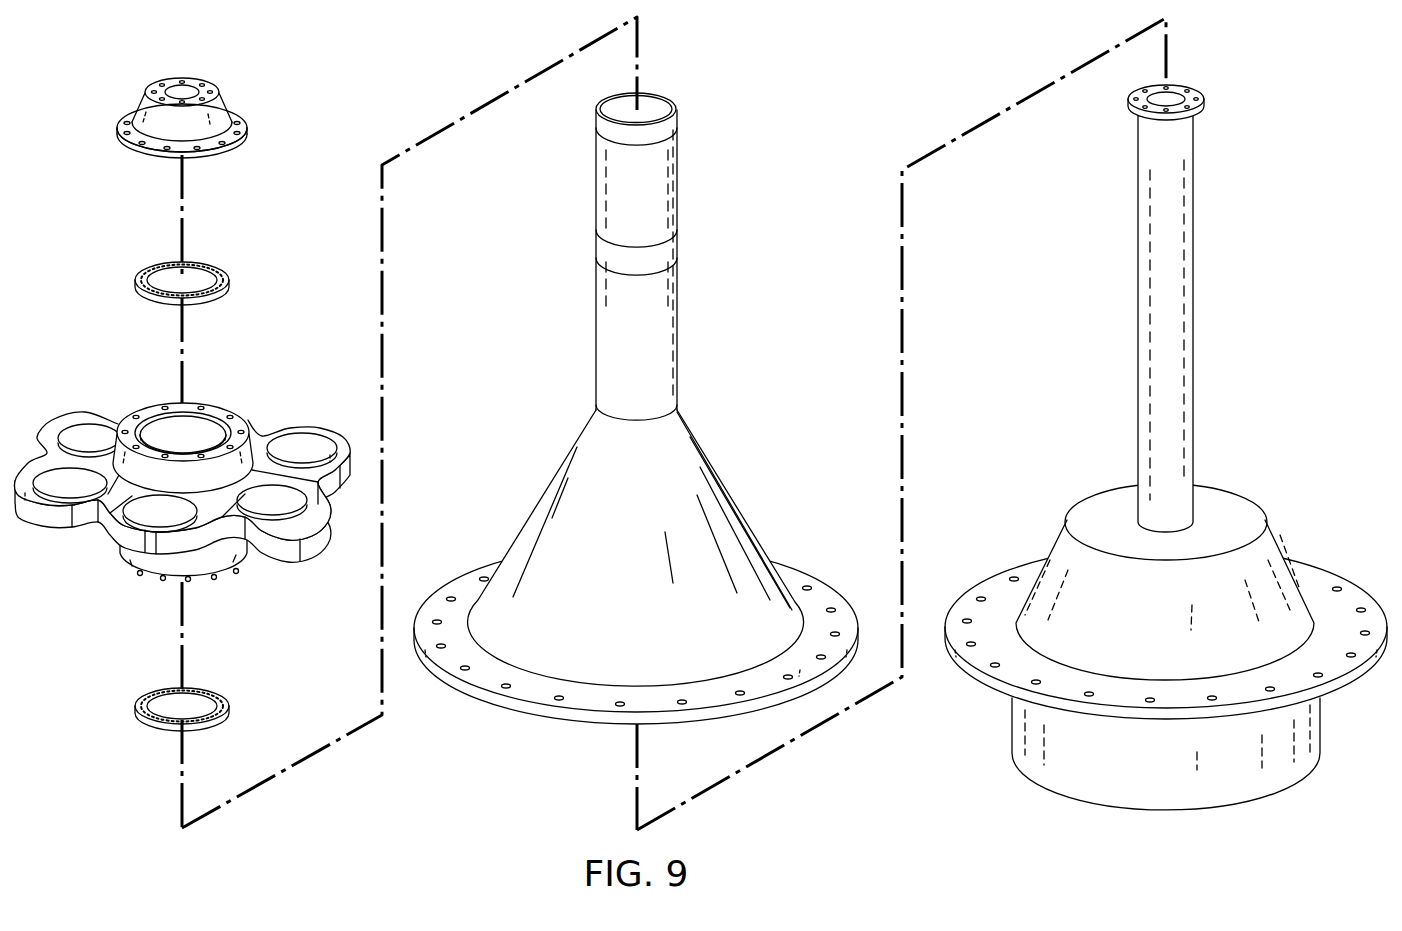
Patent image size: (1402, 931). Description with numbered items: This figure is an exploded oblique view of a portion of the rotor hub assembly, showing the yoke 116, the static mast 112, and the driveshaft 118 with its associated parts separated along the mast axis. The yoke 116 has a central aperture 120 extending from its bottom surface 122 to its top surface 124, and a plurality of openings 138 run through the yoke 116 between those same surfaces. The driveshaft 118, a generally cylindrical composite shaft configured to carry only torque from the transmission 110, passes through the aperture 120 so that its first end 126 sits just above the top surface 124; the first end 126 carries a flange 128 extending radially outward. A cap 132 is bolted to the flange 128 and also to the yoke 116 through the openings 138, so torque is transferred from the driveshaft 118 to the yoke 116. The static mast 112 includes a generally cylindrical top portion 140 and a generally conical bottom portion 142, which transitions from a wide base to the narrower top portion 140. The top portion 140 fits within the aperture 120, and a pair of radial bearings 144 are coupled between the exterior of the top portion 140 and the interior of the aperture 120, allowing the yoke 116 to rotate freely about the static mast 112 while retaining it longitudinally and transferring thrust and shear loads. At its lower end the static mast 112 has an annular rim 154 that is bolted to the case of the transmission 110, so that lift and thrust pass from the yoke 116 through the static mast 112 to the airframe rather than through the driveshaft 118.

The transmission 110 is at (1168, 425).
The static mast 112 is at (636, 427).
The yoke 116 is at (182, 482).
The driveshaft 118 is at (1194, 306).
The aperture 120 is at (158, 440).
The bottom surface 122 is at (208, 420).
The top surface 124 is at (127, 578).
The first end 126 is at (1208, 80).
The flange 128 is at (1190, 88).
The cap 132 is at (145, 103).
The openings 138 is at (240, 430).
The top portion 140 is at (596, 190).
The bottom portion 142 is at (535, 508).
The radial bearings 144 is at (136, 283).
The annular rim 154 is at (527, 708).